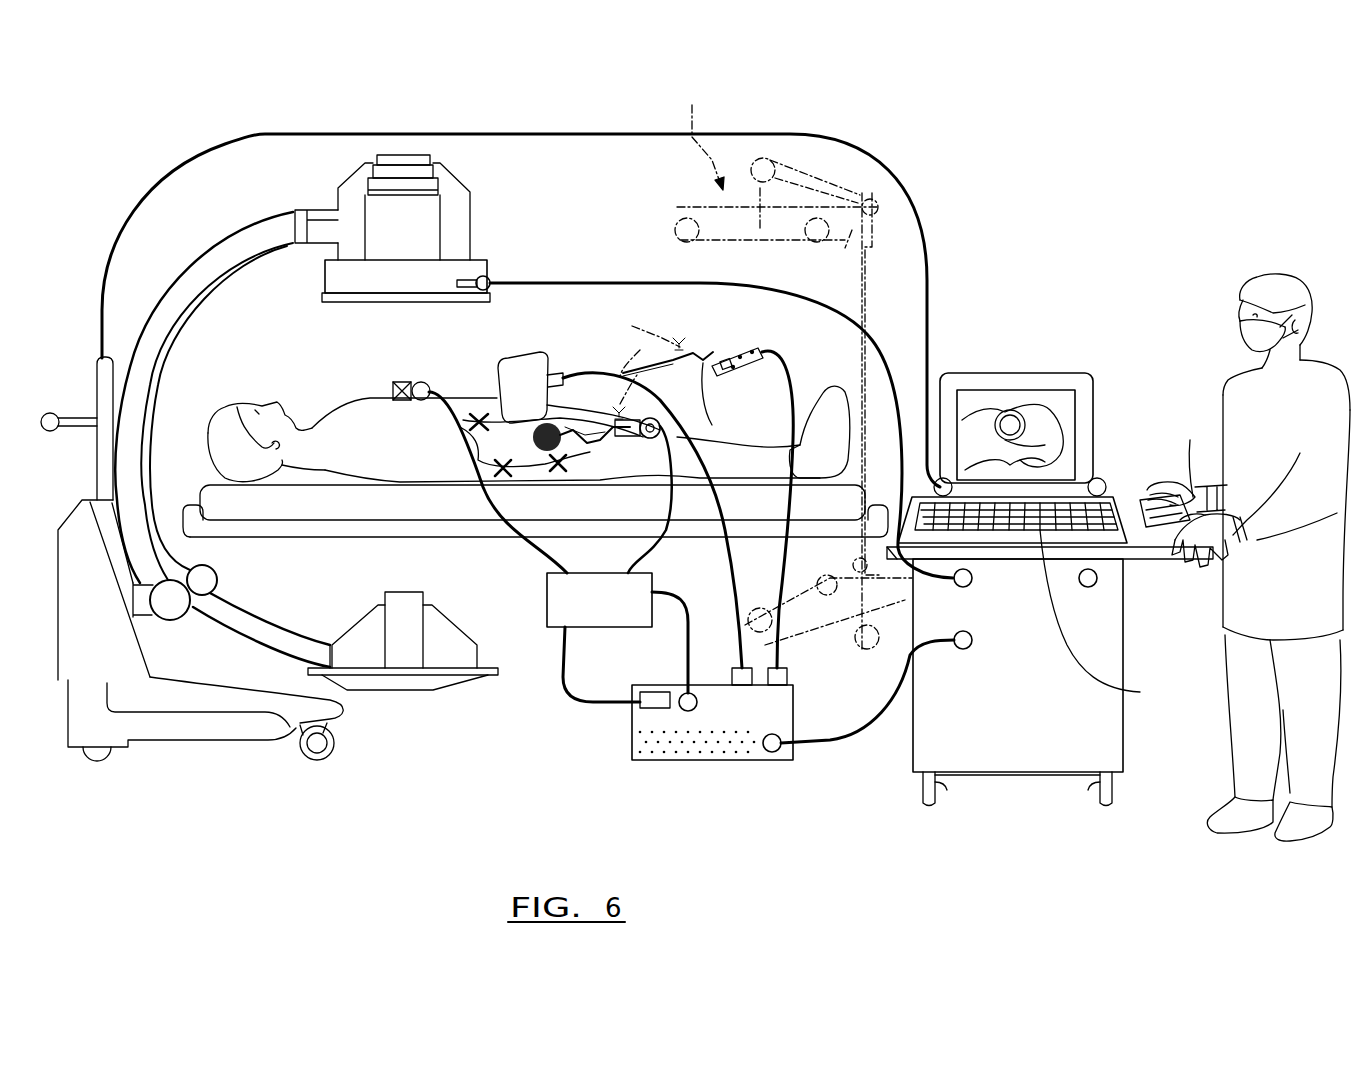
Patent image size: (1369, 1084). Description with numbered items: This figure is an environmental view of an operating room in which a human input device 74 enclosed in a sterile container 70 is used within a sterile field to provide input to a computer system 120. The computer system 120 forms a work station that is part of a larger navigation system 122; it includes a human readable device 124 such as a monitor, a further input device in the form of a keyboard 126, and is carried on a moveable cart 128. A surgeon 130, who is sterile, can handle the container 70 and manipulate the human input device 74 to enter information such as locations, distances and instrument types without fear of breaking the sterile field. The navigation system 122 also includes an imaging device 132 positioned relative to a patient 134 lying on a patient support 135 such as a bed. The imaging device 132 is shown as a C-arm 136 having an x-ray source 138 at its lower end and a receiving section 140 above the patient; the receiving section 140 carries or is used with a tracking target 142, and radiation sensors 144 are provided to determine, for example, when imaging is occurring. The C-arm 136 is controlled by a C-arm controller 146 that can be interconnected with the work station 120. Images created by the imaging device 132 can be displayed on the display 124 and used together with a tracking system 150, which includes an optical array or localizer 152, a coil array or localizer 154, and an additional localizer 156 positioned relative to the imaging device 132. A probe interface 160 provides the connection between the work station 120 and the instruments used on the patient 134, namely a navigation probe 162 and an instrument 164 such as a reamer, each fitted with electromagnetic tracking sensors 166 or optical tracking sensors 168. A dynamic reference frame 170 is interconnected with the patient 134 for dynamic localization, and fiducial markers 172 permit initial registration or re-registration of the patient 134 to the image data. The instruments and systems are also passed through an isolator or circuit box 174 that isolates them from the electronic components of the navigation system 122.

The container 70 is at (1157, 534).
The human input device 74 is at (1183, 492).
The computer system 120 is at (1068, 351).
The navigation system 122 is at (982, 211).
The human readable device 124 is at (1060, 413).
The keyboard 126 is at (1110, 619).
The moveable cart 128 is at (1027, 775).
The surgeon 130 is at (1227, 383).
The imaging device 132 is at (489, 230).
The patient 134 is at (210, 445).
The patient support 135 is at (673, 527).
The C-arm 136 is at (170, 290).
The x-ray source 138 is at (393, 643).
The receiving section 140 is at (453, 188).
The tracking target 142 is at (337, 277).
The radiation sensors 144 is at (493, 269).
The C-arm controller 146 is at (97, 390).
The tracking system 150 is at (785, 117).
The optical array or localizer 152 is at (793, 364).
The coil array or localizer 154 is at (495, 360).
The additional localizer 156 is at (322, 297).
The probe interface 160 is at (713, 760).
The navigation probe 162 is at (704, 365).
The instrument 164 is at (594, 455).
The electromagnetic tracking sensors 166 is at (633, 432).
The optical tracking sensors 168 is at (634, 327).
The dynamic reference frame 170 is at (393, 390).
The fiducial markers 172 is at (478, 413).
The isolator or circuit box 174 is at (547, 598).